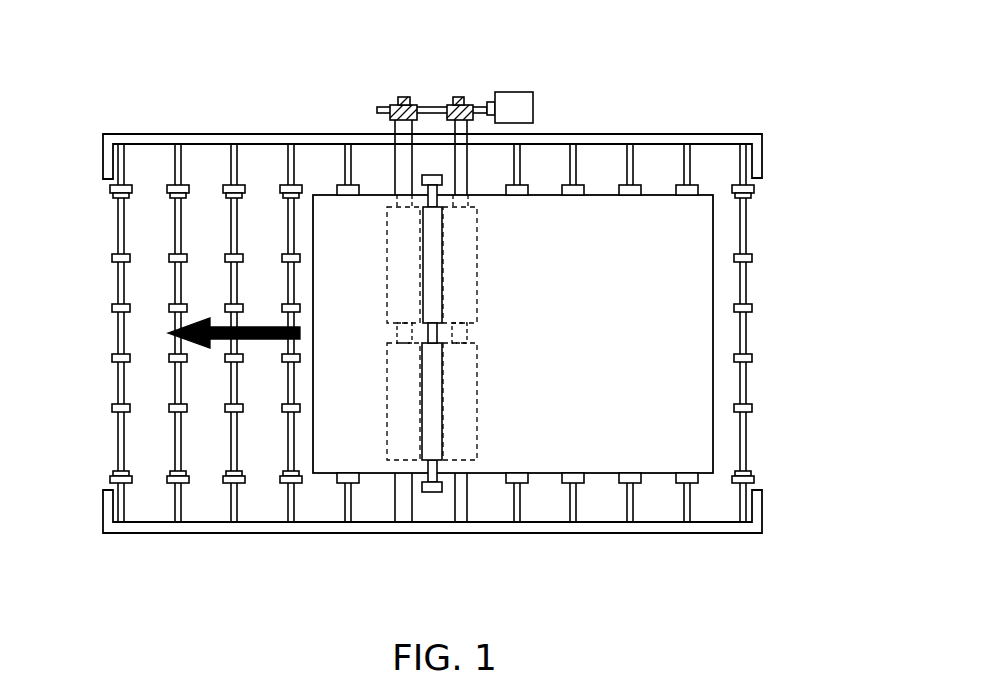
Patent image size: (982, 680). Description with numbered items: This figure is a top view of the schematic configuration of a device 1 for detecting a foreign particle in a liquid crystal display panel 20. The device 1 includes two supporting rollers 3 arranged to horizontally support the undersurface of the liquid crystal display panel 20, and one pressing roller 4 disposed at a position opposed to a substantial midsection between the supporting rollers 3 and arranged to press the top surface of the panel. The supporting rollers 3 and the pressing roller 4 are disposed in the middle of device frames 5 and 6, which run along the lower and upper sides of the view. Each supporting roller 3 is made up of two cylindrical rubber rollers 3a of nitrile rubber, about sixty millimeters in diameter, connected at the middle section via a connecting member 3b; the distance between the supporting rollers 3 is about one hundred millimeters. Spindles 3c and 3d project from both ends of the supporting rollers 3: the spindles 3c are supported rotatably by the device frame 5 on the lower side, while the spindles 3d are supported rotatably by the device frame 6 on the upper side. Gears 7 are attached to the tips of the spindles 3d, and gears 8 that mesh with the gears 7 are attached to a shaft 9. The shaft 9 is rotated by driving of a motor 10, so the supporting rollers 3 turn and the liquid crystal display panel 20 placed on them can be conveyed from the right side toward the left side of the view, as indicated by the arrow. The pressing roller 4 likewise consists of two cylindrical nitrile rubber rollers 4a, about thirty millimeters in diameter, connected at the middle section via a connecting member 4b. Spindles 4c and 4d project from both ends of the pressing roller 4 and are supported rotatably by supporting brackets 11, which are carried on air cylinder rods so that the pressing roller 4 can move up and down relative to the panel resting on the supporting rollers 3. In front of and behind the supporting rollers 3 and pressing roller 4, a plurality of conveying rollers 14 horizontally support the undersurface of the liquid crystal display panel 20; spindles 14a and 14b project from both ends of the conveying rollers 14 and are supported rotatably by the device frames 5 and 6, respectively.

The device for detecting a foreign particle 1 is at (771, 99).
The supporting roller 3 is at (388, 230).
The rubber roller 3a is at (477, 297).
The connecting member 3b is at (470, 333).
The spindle 3c is at (467, 498).
The spindle 3d is at (468, 175).
The pressing roller 4 is at (423, 258).
The rubber roller 4a is at (432, 290).
The connecting member 4b is at (430, 333).
The spindle 4c is at (420, 478).
The spindle 4d is at (400, 195).
The device frame 5 is at (620, 533).
The device frame 6 is at (653, 134).
The gear 7 is at (448, 107).
The gear 8 is at (462, 97).
The shaft 9 is at (392, 104).
The motor 10 is at (525, 92).
The supporting bracket 11 is at (430, 173).
The conveying roller 14 is at (165, 310).
The spindle 14a is at (172, 503).
The spindle 14b is at (171, 165).
The liquid crystal display panel 20 is at (713, 328).